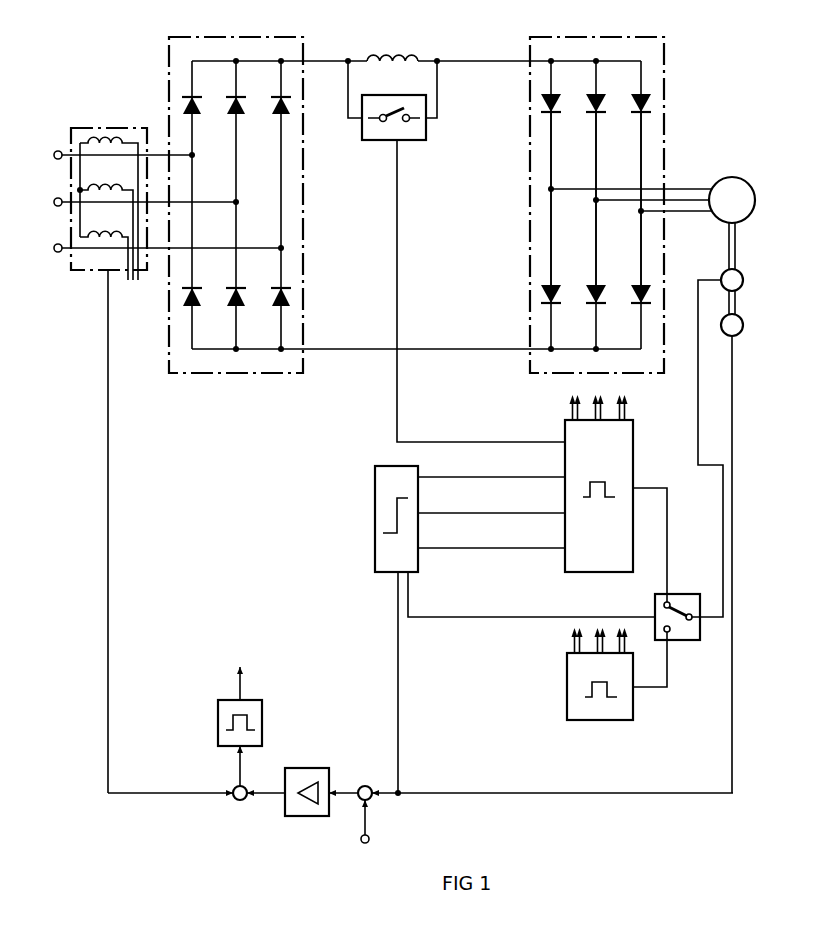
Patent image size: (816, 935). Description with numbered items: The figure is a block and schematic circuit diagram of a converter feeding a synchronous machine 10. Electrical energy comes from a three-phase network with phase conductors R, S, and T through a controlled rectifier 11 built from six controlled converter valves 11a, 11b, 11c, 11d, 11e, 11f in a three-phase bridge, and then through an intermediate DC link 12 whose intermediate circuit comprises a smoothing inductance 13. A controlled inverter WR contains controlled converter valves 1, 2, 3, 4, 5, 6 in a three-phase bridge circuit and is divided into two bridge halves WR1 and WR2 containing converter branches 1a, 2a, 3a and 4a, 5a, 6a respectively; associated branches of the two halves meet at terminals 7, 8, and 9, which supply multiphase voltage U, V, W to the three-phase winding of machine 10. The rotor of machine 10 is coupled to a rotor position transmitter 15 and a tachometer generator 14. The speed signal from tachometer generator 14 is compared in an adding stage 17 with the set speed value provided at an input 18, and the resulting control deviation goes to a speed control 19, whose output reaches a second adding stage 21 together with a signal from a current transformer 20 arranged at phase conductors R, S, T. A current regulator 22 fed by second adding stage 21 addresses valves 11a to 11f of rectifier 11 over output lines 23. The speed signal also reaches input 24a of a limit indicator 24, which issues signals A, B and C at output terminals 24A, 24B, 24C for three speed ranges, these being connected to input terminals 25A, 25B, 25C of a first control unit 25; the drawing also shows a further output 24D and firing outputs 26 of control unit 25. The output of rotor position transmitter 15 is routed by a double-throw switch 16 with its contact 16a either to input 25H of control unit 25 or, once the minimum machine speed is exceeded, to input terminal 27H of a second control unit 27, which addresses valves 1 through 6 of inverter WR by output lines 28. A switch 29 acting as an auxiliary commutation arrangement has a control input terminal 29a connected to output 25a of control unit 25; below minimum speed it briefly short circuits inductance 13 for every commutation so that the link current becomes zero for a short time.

The controlled converter valve 1 is at (554, 94).
The controlled converter valve 2 is at (599, 94).
The controlled converter valve 3 is at (639, 113).
The controlled converter valve 4 is at (554, 292).
The controlled converter valve 5 is at (591, 310).
The controlled converter valve 6 is at (635, 310).
The converter branch 1a is at (552, 155).
The converter branch 2a is at (596, 151).
The converter branch 3a is at (641, 164).
The converter branch 4a is at (551, 232).
The converter branch 5a is at (596, 244).
The converter branch 6a is at (641, 264).
The terminal 7 is at (551, 189).
The terminal 8 is at (596, 200).
The terminal 9 is at (641, 211).
The synchronous machine 10 is at (714, 178).
The controlled rectifier 11 is at (216, 205).
The controlled converter valve 11a is at (214, 90).
The controlled converter valve 11b is at (258, 90).
The controlled converter valve 11c is at (276, 114).
The controlled converter valve 11d is at (196, 308).
The controlled converter valve 11e is at (240, 308).
The controlled converter valve 11f is at (274, 286).
The intermediate DC link 12 is at (337, 218).
The smoothing inductance 13 is at (377, 52).
The tachometer generator 14 is at (722, 336).
The rotor position transmitter 15 is at (723, 274).
The double-throw switch 16 is at (665, 631).
The switch contact 16a is at (656, 609).
The adding stage 17 is at (364, 786).
The input 18 is at (362, 840).
The speed control 19 is at (306, 768).
The current transformer 20 is at (121, 128).
The second adding stage 21 is at (242, 802).
The current regulator 22 is at (262, 716).
The output lines 23 is at (244, 676).
The limit indicator 24 is at (375, 512).
The output terminal 24A is at (420, 476).
The output terminal 24B is at (420, 511).
The output terminal 24C is at (420, 547).
The output line 24D is at (416, 572).
The input 24a is at (392, 572).
The first control unit 25 is at (633, 426).
The output 25a is at (563, 440).
The input terminal 25A is at (563, 476).
The input terminal 25B is at (563, 512).
The input terminal 25C is at (563, 548).
The input 25H is at (648, 484).
The firing pulse outputs 26 is at (570, 411).
The second control unit 27 is at (623, 722).
The input terminal 27H is at (642, 688).
The output lines 28 is at (578, 645).
The switch 29 is at (414, 140).
The control input terminal 29a is at (382, 140).
The controlled inverter WR is at (615, 203).
The bridge half WR1 is at (556, 126).
The bridge half WR2 is at (556, 330).
The phase conductor R is at (115, 155).
The phase conductor S is at (137, 202).
The phase conductor T is at (159, 248).
The multiphase voltage U is at (670, 189).
The multiphase voltage V is at (691, 200).
The multiphase voltage W is at (682, 214).